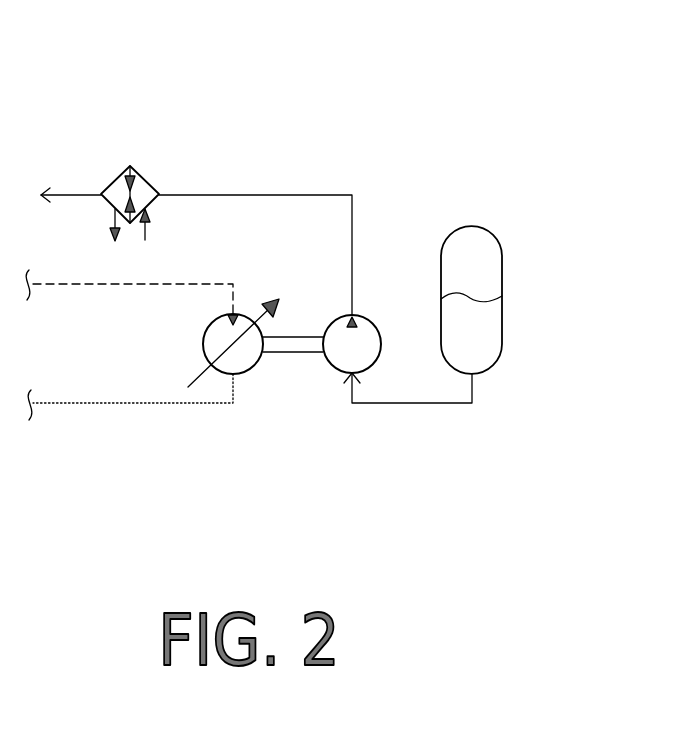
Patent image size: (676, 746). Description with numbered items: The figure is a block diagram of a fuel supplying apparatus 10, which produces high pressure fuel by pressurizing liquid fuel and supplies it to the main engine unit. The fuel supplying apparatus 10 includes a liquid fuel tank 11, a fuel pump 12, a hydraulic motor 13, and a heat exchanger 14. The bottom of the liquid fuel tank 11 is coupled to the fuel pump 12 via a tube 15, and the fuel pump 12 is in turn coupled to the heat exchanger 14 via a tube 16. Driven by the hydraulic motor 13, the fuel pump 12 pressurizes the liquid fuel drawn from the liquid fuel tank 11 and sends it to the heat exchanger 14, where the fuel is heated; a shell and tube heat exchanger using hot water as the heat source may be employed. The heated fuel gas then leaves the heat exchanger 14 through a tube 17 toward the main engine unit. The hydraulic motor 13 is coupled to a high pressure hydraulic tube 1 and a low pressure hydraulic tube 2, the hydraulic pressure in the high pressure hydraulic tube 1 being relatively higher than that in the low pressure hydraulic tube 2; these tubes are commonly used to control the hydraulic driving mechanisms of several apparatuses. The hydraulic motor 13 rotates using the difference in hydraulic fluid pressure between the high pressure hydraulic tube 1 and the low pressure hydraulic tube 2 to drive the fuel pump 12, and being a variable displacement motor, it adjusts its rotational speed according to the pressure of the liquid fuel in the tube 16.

The fuel supplying apparatus 10 is at (574, 46).
The liquid fuel tank 11 is at (503, 306).
The fuel pump 12 is at (334, 372).
The hydraulic motor 13 is at (245, 373).
The heat exchanger 14 is at (146, 180).
The tube 15 is at (427, 404).
The tube 16 is at (288, 195).
The tube 17 is at (61, 195).
The high pressure hydraulic tube 1 is at (185, 284).
The low pressure hydraulic tube 2 is at (153, 403).